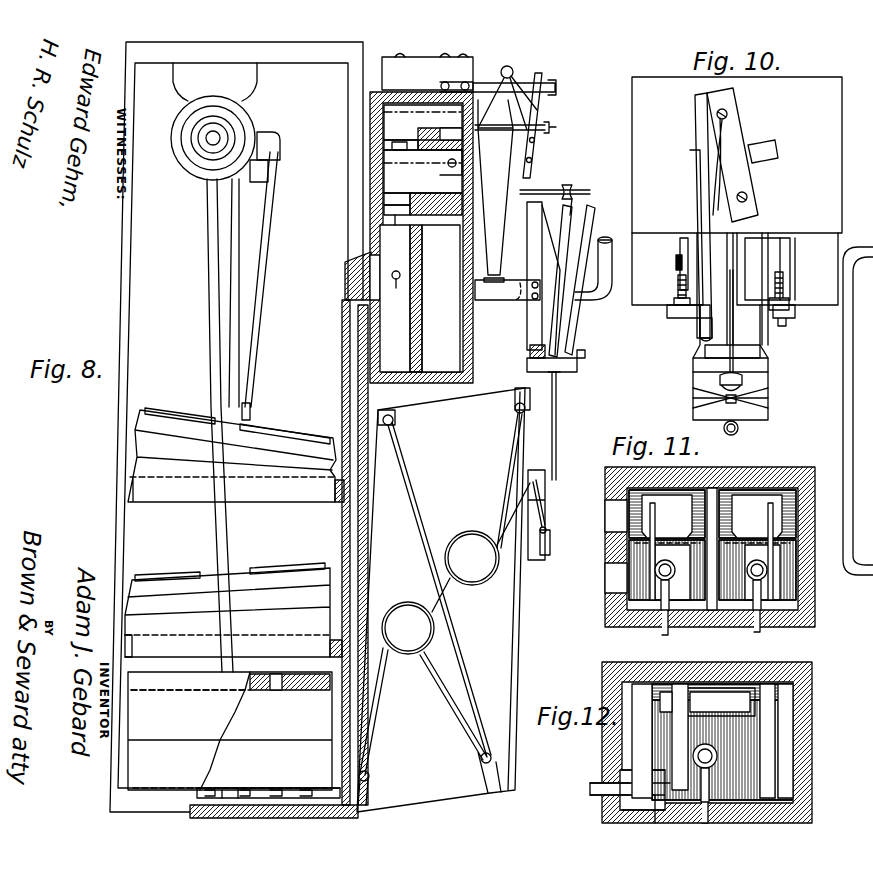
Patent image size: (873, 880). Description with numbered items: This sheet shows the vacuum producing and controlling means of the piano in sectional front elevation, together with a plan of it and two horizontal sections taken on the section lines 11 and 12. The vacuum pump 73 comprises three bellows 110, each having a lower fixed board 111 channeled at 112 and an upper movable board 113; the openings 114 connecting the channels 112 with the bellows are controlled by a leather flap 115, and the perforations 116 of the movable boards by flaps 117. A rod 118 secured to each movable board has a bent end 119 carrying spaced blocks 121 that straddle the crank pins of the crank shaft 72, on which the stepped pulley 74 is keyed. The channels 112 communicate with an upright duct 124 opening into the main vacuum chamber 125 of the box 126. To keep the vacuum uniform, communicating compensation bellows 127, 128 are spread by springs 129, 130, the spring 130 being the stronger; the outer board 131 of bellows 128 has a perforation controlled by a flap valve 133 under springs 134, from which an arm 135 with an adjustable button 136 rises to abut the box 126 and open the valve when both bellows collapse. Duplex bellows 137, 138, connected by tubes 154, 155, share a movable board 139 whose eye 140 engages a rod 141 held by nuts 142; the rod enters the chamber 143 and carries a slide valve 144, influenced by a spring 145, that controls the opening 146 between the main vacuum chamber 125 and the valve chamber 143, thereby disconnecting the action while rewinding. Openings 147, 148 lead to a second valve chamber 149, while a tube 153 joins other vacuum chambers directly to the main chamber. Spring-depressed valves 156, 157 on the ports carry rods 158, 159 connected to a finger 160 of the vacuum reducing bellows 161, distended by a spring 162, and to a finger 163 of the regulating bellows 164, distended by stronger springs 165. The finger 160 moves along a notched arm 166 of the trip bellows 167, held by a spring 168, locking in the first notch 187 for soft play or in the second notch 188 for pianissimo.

In FIG. 8, the section line 11— 11 is at (372, 106).
In FIG. 8, the section line 12— 12 is at (372, 165).
In FIG. 8, the crank shaft 72 is at (210, 148).
In FIG. 8, the vacuum pump 73 is at (236, 427).
In FIG. 8, the stepped pulley 74 is at (232, 126).
In FIG. 8, the bellows 110 is at (230, 600).
In FIG. 8, the lower fixed board 111 is at (133, 644).
In FIG. 8, the channel 112 is at (337, 502).
In FIG. 8, the upper movable board 113 is at (238, 697).
In FIG. 8, the opening 114 is at (245, 795).
In FIG. 8, the leather flap 115 is at (212, 790).
In FIG. 8, the perforation 116 is at (282, 690).
In FIG. 8, the flap 117 is at (300, 420).
In FIG. 8, the rod 118 is at (218, 322).
In FIG. 10, the rod 118 is at (853, 394).
In FIG. 8, the bent end (arm) 119 is at (281, 133).
In FIG. 8, the spaced blocks 121 is at (262, 162).
In FIG. 8, the upright duct 124 is at (345, 352).
In FIG. 8, the main vacuum chamber 125 is at (399, 320).
In FIG. 8, the box 126 is at (432, 384).
In FIG. 10, the box 126 is at (737, 191).
In FIG. 11, the box 126 is at (805, 556).
In FIG. 12, the box 126 is at (808, 705).
In FIG. 8, the compensation bellows 127 is at (419, 724).
In FIG. 8, the compensation bellows 128 is at (443, 600).
In FIG. 8, the spring 129 is at (398, 655).
In FIG. 8, the spring 130 is at (466, 592).
In FIG. 8, the outer board 131 is at (514, 627).
In FIG. 8, the flap valve 133 is at (528, 486).
In FIG. 8, the springs 134 is at (546, 512).
In FIG. 8, the arm 135 is at (557, 393).
In FIG. 8, the adjustable button 136 is at (530, 352).
In FIG. 8, the bellows 137 is at (578, 303).
In FIG. 10, the bellows 137 is at (700, 397).
In FIG. 8, the bellows 138 is at (527, 318).
In FIG. 10, the bellows 138 is at (758, 364).
In FIG. 8, the common movable board 139 is at (568, 330).
In FIG. 10, the common movable board 139 is at (700, 380).
In FIG. 8, the eye 140 is at (576, 185).
In FIG. 10, the eye 140 is at (740, 395).
In FIG. 8, the rod 141 is at (588, 193).
In FIG. 10, the rod 141 is at (735, 362).
In FIG. 12, the rod 141 is at (710, 786).
In FIG. 8, the nuts 142 is at (580, 188).
In FIG. 10, the nuts 142 is at (726, 398).
In FIG. 8, the valve chamber 143 is at (423, 182).
In FIG. 12, the valve chamber 143 is at (632, 699).
In FIG. 8, the slide valve 144 is at (384, 208).
In FIG. 12, the slide valve 144 is at (738, 745).
In FIG. 8, the spring 145 is at (384, 198).
In FIG. 12, the spring 145 is at (675, 742).
In FIG. 8, the opening 146 is at (400, 222).
In FIG. 12, the opening 146 is at (718, 702).
In FIG. 8, the opening (port) 147 is at (384, 150).
In FIG. 11, the opening (port) 147 is at (667, 547).
In FIG. 11, the opening (port) 148 is at (757, 547).
In FIG. 8, the second valve chamber 149 is at (423, 127).
In FIG. 11, the second valve chamber 149 is at (803, 512).
In FIG. 8, the tube 153 is at (399, 289).
In FIG. 8, the tube 154 is at (595, 280).
In FIG. 8, the tube 155 is at (507, 289).
In FIG. 8, the spring-depressed valve 156 is at (384, 142).
In FIG. 11, the spring-depressed valve 156 is at (640, 585).
In FIG. 11, the spring-depressed valve 157 is at (782, 585).
In FIG. 8, the rod 158 is at (545, 127).
In FIG. 10, the rod 158 is at (678, 289).
In FIG. 11, the rod 158 is at (668, 625).
In FIG. 10, the rod 159 is at (786, 292).
In FIG. 11, the rod 159 is at (760, 630).
In FIG. 8, the finger 160 is at (540, 107).
In FIG. 10, the finger 160 is at (697, 322).
In FIG. 8, the vacuum reducing bellows 161 is at (498, 187).
In FIG. 10, the vacuum reducing bellows 161 is at (662, 264).
In FIG. 8, the spring 162 is at (508, 66).
In FIG. 10, the spring 162 is at (678, 242).
In FIG. 10, the finger 163 is at (795, 318).
In FIG. 10, the regulating bellows 164 is at (806, 269).
In FIG. 10, the springs 165 is at (785, 263).
In FIG. 8, the notched arm 166 is at (556, 90).
In FIG. 10, the notched arm 166 is at (700, 328).
In FIG. 8, the trip bellows 167 is at (427, 73).
In FIG. 10, the trip bellows 167 is at (725, 192).
In FIG. 8, the spring 168 is at (431, 46).
In FIG. 10, the spring 168 is at (708, 145).
In FIG. 8, the first notch 187 is at (515, 80).
In FIG. 10, the first notch 187 is at (690, 316).
In FIG. 8, the second notch (shoulder) 188 is at (470, 80).
In FIG. 10, the second notch (shoulder) 188 is at (688, 272).